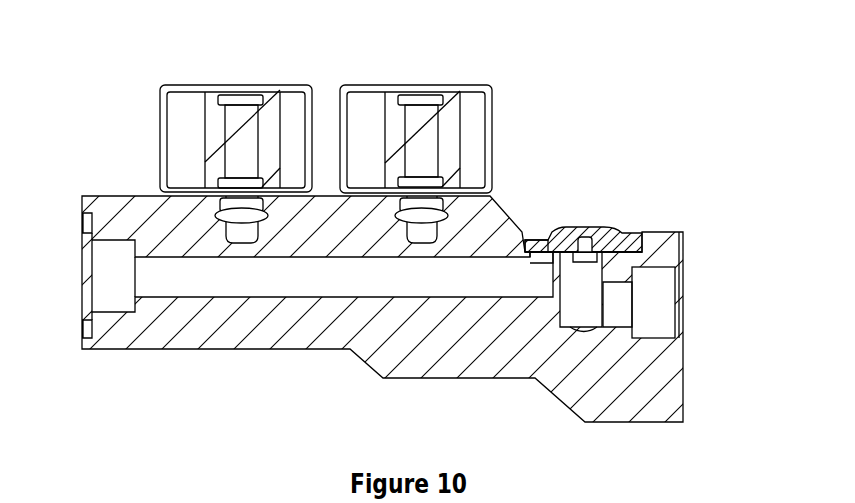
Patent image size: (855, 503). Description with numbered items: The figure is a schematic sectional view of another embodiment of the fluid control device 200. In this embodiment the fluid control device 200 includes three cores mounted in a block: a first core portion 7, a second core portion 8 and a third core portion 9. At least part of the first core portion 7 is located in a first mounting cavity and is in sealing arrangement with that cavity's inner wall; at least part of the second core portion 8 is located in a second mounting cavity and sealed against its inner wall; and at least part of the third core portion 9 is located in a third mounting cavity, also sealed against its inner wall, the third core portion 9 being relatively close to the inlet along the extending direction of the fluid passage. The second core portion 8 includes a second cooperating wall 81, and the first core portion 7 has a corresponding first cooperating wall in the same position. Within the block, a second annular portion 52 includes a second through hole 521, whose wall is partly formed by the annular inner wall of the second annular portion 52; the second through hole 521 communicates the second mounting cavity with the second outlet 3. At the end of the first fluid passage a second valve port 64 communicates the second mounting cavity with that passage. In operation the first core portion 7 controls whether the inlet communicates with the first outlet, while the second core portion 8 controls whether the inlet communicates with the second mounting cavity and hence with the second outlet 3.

The fluid control device 200 is at (599, 111).
The second outlet 3 is at (683, 318).
The first core portion 7 is at (314, 68).
The third core portion 9 is at (140, 118).
The second core portion 8 is at (616, 209).
The second cooperating wall 81 is at (531, 246).
The second annular portion 52 is at (585, 308).
The second through hole 521 is at (634, 268).
The second valve port 64 is at (546, 262).